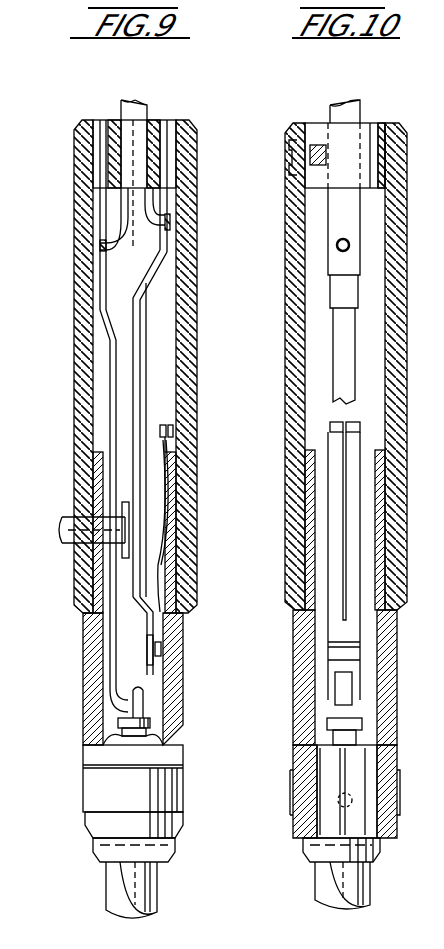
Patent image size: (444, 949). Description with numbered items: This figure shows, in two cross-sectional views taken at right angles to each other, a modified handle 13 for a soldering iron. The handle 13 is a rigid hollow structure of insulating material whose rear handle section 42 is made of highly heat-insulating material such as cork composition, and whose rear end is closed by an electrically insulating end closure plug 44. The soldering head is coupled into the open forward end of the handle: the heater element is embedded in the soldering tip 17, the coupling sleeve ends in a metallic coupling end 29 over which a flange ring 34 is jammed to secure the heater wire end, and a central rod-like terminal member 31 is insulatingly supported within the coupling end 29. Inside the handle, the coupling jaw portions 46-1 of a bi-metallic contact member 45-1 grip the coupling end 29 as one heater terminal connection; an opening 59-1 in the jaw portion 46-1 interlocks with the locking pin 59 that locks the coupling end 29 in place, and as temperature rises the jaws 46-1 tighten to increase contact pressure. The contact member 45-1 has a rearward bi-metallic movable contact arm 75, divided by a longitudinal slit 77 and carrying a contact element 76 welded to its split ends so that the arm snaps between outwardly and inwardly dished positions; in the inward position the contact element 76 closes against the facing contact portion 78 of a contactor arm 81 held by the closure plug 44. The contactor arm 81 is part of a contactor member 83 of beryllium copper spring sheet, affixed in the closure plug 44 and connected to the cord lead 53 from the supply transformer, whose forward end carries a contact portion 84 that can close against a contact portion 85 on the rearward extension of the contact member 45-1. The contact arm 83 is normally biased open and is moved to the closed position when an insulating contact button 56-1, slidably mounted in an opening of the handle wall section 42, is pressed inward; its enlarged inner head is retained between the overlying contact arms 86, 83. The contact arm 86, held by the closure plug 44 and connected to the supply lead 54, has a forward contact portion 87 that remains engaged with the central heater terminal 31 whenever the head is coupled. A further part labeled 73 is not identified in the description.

In FIG. 9, the handle 13 is at (66, 262).
In FIG. 9, the soldering tip 17 is at (122, 890).
In FIG. 10, the soldering tip 17 is at (328, 888).
In FIG. 9, the coupling end of the coupling sleeve 29 is at (118, 755).
In FIG. 10, the coupling end of the coupling sleeve 29 is at (383, 742).
In FIG. 9, the central terminal rod 31 is at (130, 706).
In FIG. 9, the flange ring 34 is at (108, 846).
In FIG. 10, the flange ring 34 is at (312, 854).
In FIG. 9, the rear handle section 42 is at (73, 586).
In FIG. 10, the rear handle section 42 is at (346, 366).
In FIG. 9, the end closure plug 44 is at (168, 132).
In FIG. 10, the end closure plug 44 is at (318, 135).
In FIG. 9, the contact member 45-1 is at (168, 702).
In FIG. 10, the contact member 45-1 is at (353, 666).
In FIG. 10, the coupling jaw portions 46-1 is at (330, 752).
In FIG. 9, the cord lead 53 is at (150, 238).
In FIG. 9, the supply lead 54 is at (130, 222).
In FIG. 9, the contact button 56-1 is at (62, 525).
In FIG. 10, the locking pin 59 is at (386, 283).
In FIG. 10, the opening in the jaw portion 59-1 is at (338, 800).
In FIG. 10, the spacer 73 is at (352, 620).
In FIG. 9, the movable contact arm 75 is at (158, 548).
In FIG. 9, the contact element 76 is at (170, 437).
In FIG. 10, the contact element 76 is at (356, 433).
In FIG. 10, the longitudinal slit 77 is at (343, 462).
In FIG. 9, the contact portion 78 is at (157, 428).
In FIG. 9, the contactor arm 81 is at (147, 393).
In FIG. 9, the contactor member 83 is at (133, 318).
In FIG. 9, the contact portion 84 is at (148, 637).
In FIG. 9, the contact portion 85 is at (161, 652).
In FIG. 9, the contact arm 86 is at (110, 378).
In FIG. 9, the contact portion 87 is at (115, 682).